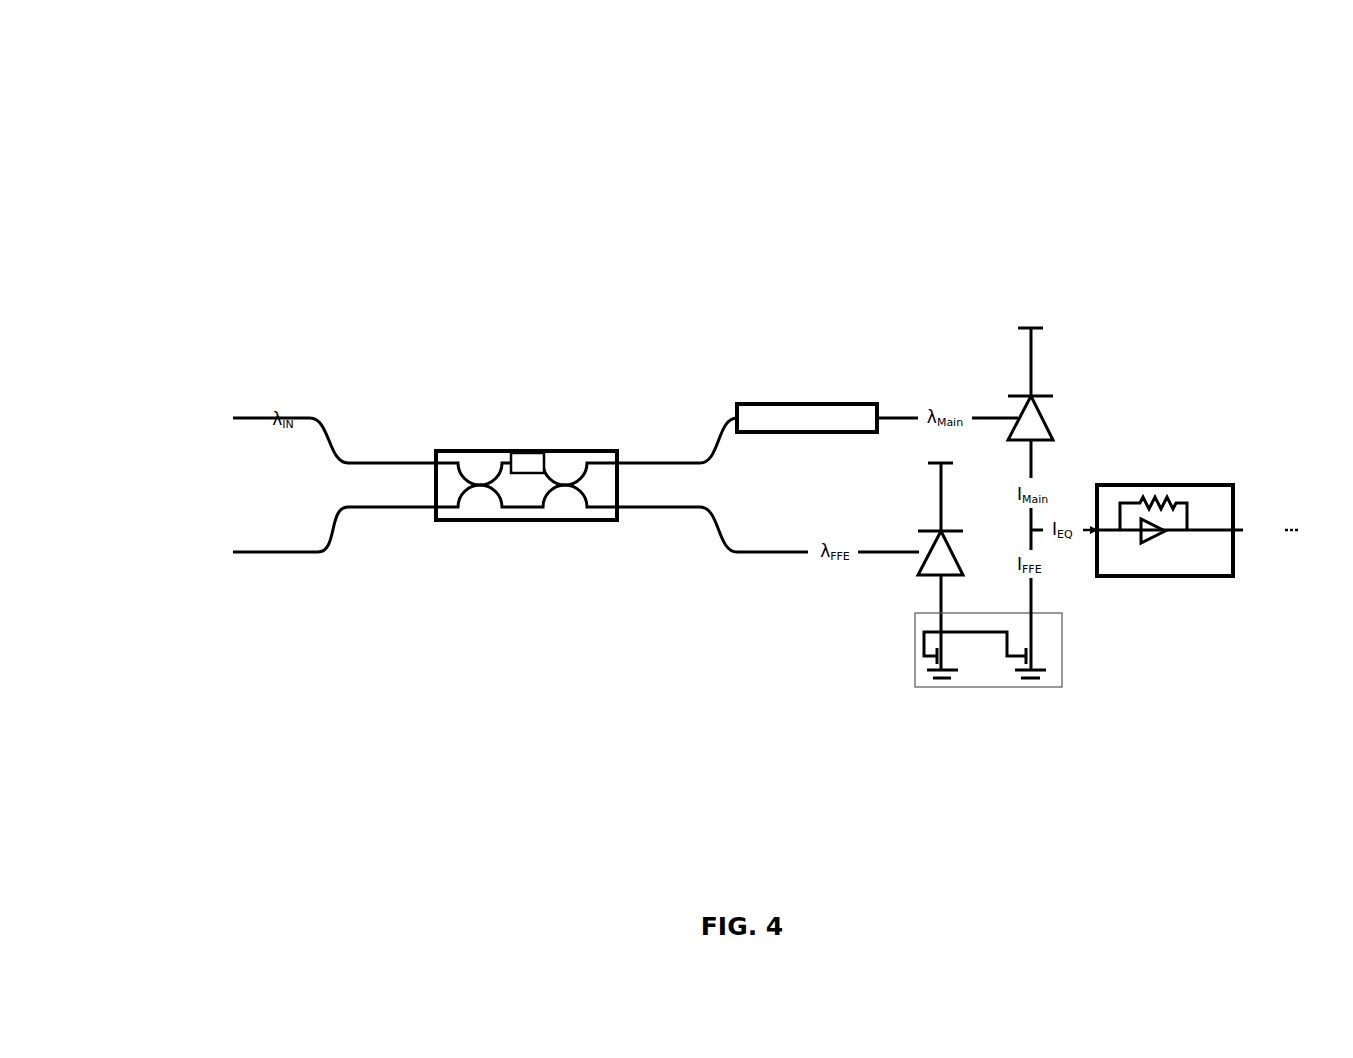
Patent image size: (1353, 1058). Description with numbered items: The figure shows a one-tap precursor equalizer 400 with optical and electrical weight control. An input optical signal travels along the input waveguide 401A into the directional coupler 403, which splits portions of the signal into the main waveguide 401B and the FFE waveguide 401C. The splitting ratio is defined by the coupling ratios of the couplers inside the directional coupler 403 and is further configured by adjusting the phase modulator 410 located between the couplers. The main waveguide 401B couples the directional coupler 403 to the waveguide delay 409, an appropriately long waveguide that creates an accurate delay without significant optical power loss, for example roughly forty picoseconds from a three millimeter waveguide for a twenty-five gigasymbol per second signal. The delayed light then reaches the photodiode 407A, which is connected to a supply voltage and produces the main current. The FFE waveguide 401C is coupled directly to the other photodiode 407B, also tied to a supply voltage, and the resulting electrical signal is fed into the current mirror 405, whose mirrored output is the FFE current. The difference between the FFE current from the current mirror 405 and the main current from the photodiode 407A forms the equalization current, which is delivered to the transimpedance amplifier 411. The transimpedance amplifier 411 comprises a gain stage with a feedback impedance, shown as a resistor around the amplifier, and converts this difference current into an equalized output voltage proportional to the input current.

The equalizer 400 is at (282, 98).
The input waveguide 401A is at (250, 421).
The main waveguide 401B is at (656, 461).
The FFE waveguide 401C is at (756, 553).
The directional coupler 403 is at (526, 446).
The current mirror 405 is at (990, 687).
The photodiode 407A is at (1053, 425).
The photodiode 407B is at (920, 579).
The waveguide delay 409 is at (773, 404).
The phase modulator 410 is at (521, 453).
The transimpedance amplifier 411 is at (1172, 485).